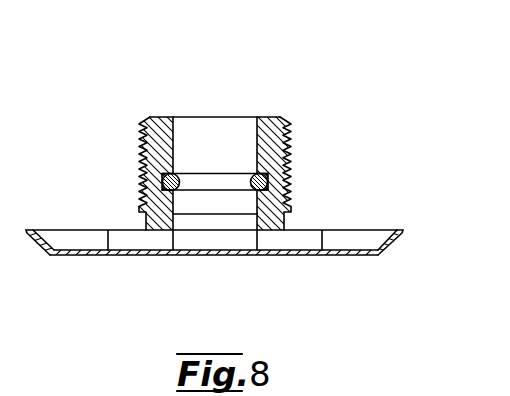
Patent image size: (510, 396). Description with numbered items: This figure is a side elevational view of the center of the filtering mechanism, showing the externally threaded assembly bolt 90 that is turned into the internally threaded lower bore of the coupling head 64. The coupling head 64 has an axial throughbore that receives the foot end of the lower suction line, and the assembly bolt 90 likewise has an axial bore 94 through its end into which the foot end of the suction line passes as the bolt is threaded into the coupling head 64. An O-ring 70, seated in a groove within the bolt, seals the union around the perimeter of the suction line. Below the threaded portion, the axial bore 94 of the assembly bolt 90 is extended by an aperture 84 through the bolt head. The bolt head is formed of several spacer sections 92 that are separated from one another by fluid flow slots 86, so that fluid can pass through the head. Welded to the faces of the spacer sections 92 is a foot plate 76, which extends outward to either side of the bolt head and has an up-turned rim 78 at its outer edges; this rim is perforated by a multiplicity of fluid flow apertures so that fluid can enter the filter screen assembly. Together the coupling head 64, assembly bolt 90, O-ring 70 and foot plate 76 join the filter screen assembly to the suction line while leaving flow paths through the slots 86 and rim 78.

The coupling head 64 is at (293, 211).
The O-ring 70 is at (176, 172).
The foot plate 76 is at (84, 257).
The up-turned rim 78 is at (398, 237).
The aperture 84 is at (226, 229).
The fluid flow slots 86 is at (190, 246).
The assembly bolt 90 is at (150, 127).
The spacer sections 92 is at (302, 240).
The axial bore 94 is at (212, 127).